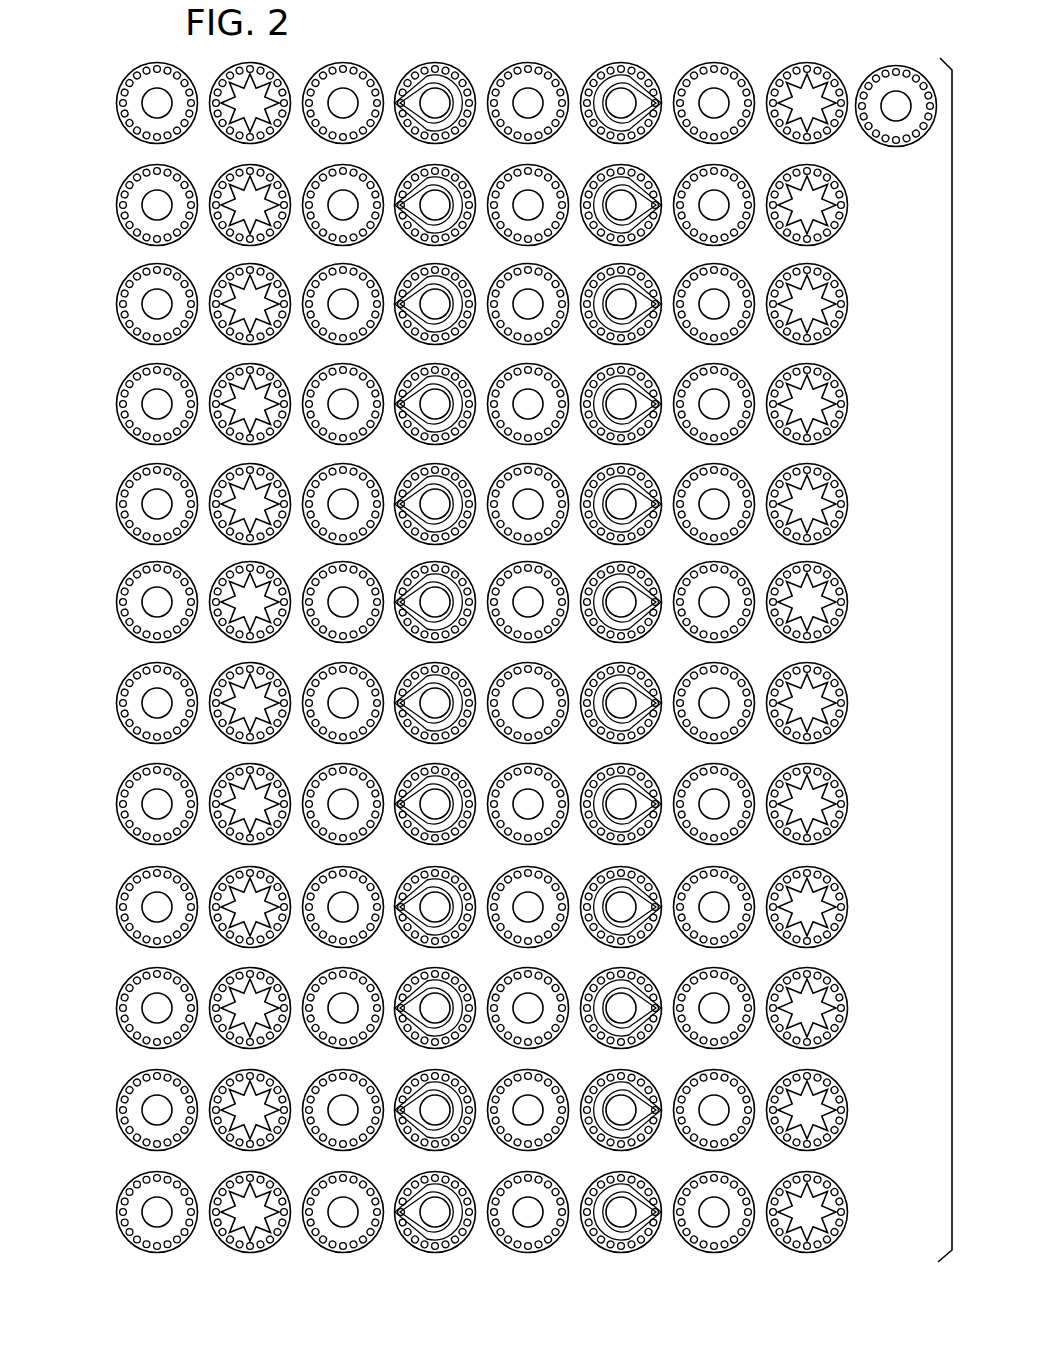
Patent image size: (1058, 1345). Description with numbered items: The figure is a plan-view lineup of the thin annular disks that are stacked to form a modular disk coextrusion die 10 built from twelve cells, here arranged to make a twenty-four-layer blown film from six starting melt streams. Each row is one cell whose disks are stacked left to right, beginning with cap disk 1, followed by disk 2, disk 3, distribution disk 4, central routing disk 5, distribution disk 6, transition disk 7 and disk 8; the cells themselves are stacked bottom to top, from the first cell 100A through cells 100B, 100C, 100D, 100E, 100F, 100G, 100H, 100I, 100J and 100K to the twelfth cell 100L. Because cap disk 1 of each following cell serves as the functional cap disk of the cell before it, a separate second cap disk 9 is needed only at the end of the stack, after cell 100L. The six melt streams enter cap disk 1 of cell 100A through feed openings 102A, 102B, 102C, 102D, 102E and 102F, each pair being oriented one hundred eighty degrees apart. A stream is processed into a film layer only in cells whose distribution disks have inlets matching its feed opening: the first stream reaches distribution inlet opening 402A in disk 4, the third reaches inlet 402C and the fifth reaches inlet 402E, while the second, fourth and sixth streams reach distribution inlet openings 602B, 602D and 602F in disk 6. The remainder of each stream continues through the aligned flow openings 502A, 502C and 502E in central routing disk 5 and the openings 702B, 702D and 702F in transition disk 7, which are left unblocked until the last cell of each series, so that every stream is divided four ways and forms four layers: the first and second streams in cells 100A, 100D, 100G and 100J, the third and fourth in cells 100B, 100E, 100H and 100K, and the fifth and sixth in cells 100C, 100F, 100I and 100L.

The modular disk coextrusion die 10 is at (818, 48).
The second cap disk 9 is at (906, 78).
The cap disk 1 is at (148, 1250).
The second disk of the cell 2 is at (264, 1249).
The third disk of the cell 3 is at (344, 1249).
The distribution disk 4 is at (436, 1249).
The central routing disk 5 is at (529, 1249).
The distribution disk 6 is at (622, 1249).
The transition disk 7 is at (715, 1249).
The eighth disk of the cell 8 is at (808, 1249).
The first cell 100A is at (491, 1216).
The second cell 100B is at (502, 1101).
The third cell 100C is at (502, 999).
The fourth cell 100D is at (527, 906).
The fifth cell 100E is at (525, 803).
The sixth cell 100F is at (525, 702).
The seventh cell 100G is at (527, 601).
The eighth cell 100H is at (527, 503).
The ninth cell 100I is at (522, 403).
The tenth cell 100J is at (522, 303).
The eleventh cell 100K is at (526, 204).
The twelfth cell 100L is at (112, 68).
The feed opening 102A is at (120, 1200).
The feed opening 102B is at (195, 1225).
The feed inlet 102C is at (118, 1210).
The feed inlet 102D is at (197, 1208).
The feed inlet 102E is at (120, 1228).
The feed inlet 102F is at (193, 1206).
The distribution inlet opening 402A is at (419, 722).
The distribution inlet opening 402C is at (419, 646).
The distribution inlet opening 402E is at (419, 544).
The flow opening 502A is at (513, 724).
The inlet opening 502C is at (513, 646).
The inlet opening 502E is at (513, 544).
The distribution inlet opening 602B is at (639, 722).
The distribution inlet opening 602D is at (640, 646).
The distribution inlet opening 602F is at (638, 544).
The opening in transition disk 702B is at (733, 722).
The inlet opening 702D is at (734, 646).
The inlet opening 702F is at (732, 544).